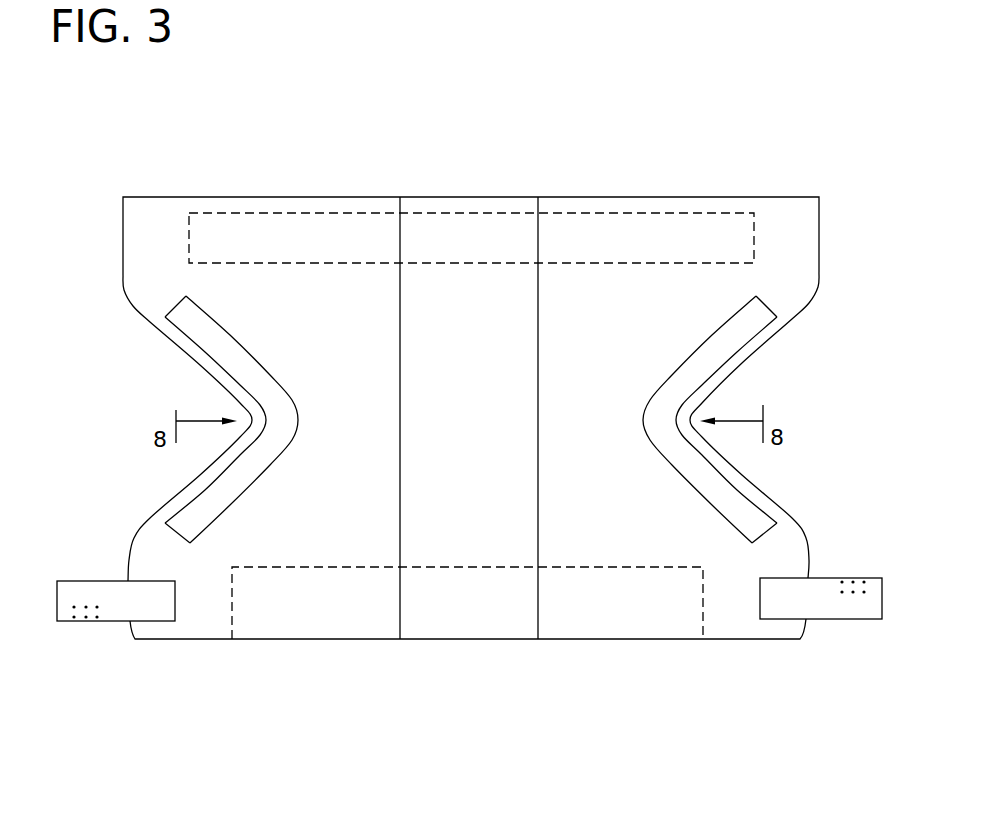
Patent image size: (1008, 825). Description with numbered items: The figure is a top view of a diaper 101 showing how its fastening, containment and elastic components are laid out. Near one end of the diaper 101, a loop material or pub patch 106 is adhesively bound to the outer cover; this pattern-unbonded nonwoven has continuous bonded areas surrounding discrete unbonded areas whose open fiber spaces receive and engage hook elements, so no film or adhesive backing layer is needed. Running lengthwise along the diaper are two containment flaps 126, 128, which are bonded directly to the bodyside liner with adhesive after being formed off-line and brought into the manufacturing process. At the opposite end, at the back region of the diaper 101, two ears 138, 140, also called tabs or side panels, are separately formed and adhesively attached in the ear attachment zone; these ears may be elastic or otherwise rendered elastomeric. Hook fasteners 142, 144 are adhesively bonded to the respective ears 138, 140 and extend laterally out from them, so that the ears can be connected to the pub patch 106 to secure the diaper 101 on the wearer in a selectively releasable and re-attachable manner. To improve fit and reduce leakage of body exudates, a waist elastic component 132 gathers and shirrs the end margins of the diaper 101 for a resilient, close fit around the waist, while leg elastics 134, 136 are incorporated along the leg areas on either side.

The diaper 101 is at (121, 164).
The loop material or pub patch 106 is at (598, 212).
The containment flap 126 is at (400, 201).
The containment flap 128 is at (537, 231).
The waist elastic component 132 is at (361, 620).
The leg elastic 134 is at (730, 497).
The leg elastic 136 is at (208, 505).
The ear 138 is at (845, 608).
The ear 140 is at (88, 597).
The hook fastener 142 is at (87, 617).
The hook fastener 144 is at (852, 583).